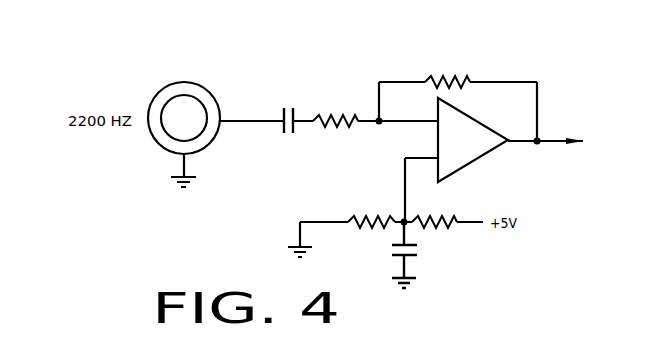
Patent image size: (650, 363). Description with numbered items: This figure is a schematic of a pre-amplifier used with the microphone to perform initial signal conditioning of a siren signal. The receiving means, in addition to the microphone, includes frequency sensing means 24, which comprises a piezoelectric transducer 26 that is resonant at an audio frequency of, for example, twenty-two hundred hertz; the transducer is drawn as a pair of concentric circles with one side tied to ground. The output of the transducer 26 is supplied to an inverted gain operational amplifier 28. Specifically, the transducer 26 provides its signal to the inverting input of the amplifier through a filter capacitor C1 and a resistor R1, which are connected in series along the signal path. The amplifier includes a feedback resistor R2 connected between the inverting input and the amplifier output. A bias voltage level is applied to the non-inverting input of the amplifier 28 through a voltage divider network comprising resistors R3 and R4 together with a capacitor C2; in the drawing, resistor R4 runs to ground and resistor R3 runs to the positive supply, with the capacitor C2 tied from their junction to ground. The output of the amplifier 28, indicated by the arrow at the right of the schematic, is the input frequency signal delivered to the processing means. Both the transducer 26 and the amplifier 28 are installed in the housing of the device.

The frequency sensing means 24 is at (189, 66).
The piezoelectric transducer 26 is at (160, 143).
The inverted gain operational amplifier 28 is at (497, 150).
The filter capacitor C1 is at (294, 106).
The capacitor C2 is at (414, 257).
The resistor R1 is at (332, 113).
The feedback resistor R2 is at (448, 78).
The resistor R3 is at (440, 216).
The resistor R4 is at (378, 216).